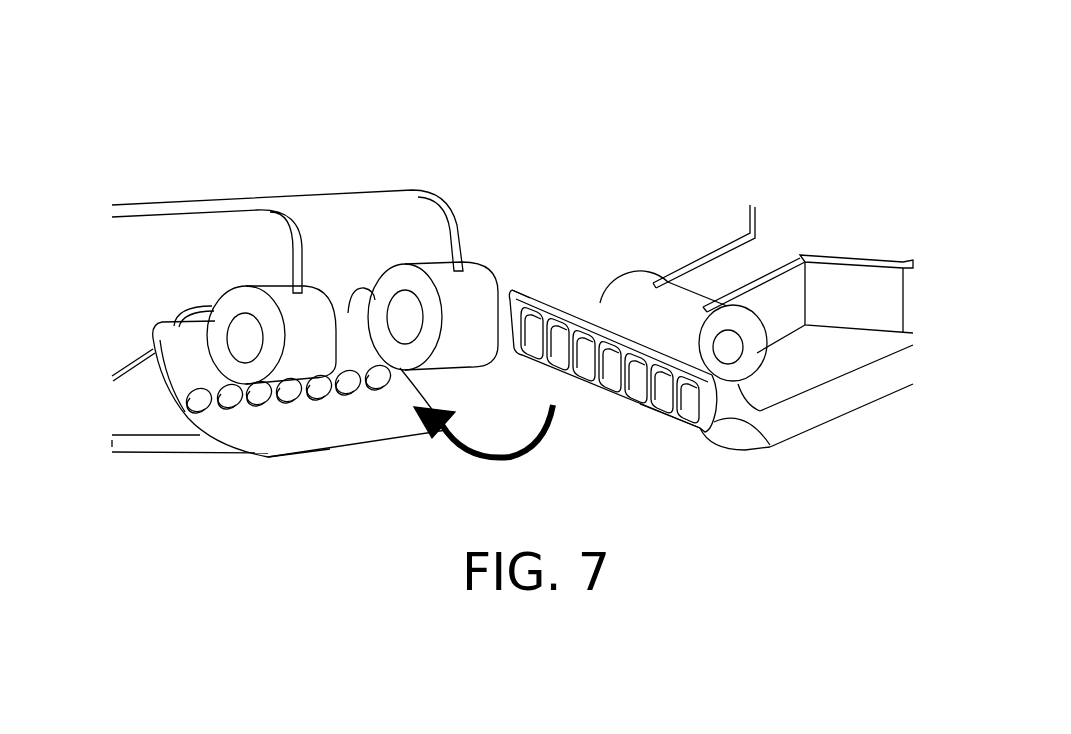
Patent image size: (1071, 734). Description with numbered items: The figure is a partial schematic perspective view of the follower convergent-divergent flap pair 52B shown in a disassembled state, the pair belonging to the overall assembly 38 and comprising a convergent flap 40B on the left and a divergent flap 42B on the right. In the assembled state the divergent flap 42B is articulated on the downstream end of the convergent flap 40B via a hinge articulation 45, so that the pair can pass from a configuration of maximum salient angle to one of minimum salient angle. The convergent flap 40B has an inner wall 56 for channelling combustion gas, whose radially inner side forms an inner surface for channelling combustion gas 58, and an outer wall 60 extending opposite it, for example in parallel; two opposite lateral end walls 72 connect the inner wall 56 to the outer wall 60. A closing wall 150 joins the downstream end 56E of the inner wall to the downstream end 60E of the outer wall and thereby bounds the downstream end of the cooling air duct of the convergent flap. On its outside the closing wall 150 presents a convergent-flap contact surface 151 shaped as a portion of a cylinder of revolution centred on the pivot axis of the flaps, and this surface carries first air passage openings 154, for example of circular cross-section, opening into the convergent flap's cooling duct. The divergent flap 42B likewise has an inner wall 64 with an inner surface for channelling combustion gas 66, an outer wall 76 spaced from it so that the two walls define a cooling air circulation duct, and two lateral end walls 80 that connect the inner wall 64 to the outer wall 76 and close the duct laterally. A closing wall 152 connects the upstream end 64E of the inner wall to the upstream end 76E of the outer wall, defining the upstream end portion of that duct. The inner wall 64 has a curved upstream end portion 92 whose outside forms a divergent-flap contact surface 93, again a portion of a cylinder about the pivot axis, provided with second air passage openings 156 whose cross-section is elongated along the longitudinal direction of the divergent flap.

The roller assembly 38 is at (602, 49).
The follower convergent-divergent flap pair 52B is at (633, 89).
The convergent flap 40B is at (368, 181).
The divergent flap 42B is at (705, 222).
The hinge articulation 45 is at (620, 297).
The convergent-flap contact surface 151 is at (365, 421).
The downstream end of the inner wall 56E is at (328, 450).
The first air passage openings 154 is at (228, 404).
The closing wall 150 is at (172, 410).
The inner wall 56 is at (181, 483).
The inner surface for channelling combustion gas 58 is at (128, 454).
The outer wall 60 is at (140, 355).
The downstream end of the outer wall 60E is at (168, 325).
The lateral end walls 72 is at (118, 404).
The upstream end of the outer wall 76E is at (563, 302).
The second air passage openings 156 is at (613, 377).
The upstream end of the inner wall 64E is at (543, 298).
The divergent-flap contact surface 93 is at (703, 433).
The closing wall 152 is at (650, 337).
The upstream end portion 92 is at (770, 440).
The inner wall 64 is at (842, 412).
The inner surface for channelling combustion gas 66 is at (860, 410).
The lateral end walls 80 is at (883, 377).
The outer wall 76 is at (847, 347).